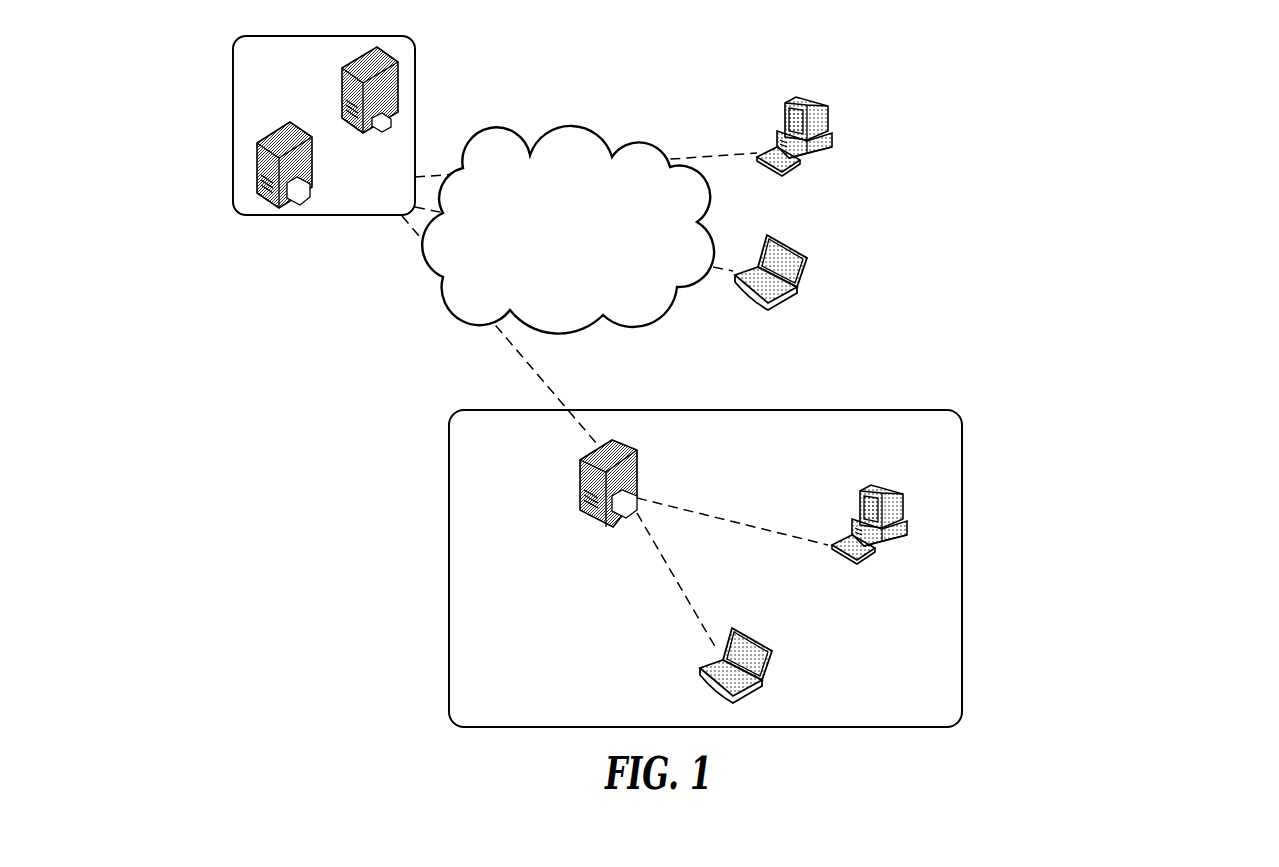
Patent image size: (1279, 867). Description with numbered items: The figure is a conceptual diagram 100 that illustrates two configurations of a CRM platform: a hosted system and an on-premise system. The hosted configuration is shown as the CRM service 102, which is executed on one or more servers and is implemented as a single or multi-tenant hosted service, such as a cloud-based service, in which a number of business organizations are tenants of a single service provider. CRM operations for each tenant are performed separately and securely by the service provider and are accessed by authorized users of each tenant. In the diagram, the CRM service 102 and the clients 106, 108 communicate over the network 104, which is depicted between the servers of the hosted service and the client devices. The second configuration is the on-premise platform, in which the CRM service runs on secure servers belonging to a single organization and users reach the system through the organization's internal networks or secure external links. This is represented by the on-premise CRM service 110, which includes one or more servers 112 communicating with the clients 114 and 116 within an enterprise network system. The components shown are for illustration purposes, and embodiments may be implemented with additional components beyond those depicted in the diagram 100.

The diagram 100 is at (1122, 80).
The CRM service 102 is at (220, 72).
The network 104 is at (562, 108).
The client 106 is at (835, 95).
The client 108 is at (808, 235).
The on-premise CRM service 110 is at (955, 390).
The servers 112 is at (572, 465).
The client 114 is at (857, 480).
The client 116 is at (707, 660).